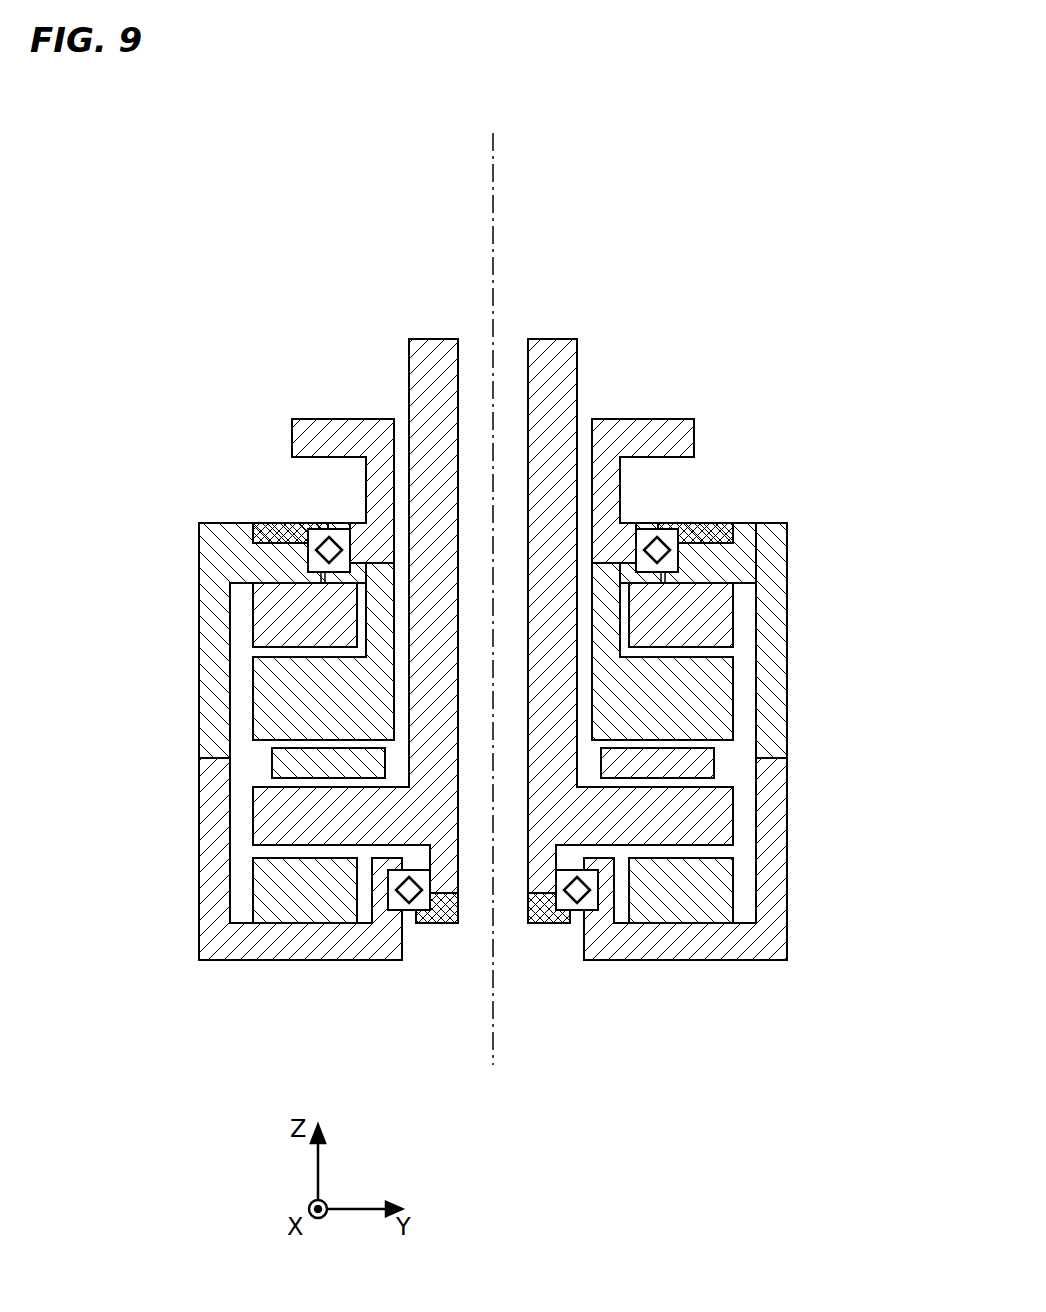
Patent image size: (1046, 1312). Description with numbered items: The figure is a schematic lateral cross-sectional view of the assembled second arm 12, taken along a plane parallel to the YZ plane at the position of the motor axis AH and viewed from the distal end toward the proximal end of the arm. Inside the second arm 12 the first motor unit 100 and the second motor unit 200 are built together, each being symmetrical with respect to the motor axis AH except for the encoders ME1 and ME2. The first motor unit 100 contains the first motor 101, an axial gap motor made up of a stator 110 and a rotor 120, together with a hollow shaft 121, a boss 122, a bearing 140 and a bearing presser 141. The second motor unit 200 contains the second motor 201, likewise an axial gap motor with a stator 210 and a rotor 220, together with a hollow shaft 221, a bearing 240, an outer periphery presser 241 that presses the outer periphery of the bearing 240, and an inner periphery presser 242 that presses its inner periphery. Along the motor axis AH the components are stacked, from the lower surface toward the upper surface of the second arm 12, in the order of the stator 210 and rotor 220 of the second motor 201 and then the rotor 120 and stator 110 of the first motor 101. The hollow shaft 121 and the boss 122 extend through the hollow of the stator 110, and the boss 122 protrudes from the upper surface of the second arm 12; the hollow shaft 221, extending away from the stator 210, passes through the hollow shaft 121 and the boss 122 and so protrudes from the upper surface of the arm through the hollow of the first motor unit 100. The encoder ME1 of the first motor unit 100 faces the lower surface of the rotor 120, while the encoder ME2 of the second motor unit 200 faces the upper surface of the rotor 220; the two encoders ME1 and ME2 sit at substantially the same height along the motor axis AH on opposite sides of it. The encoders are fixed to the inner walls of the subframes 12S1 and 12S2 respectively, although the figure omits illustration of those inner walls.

The second arm 12 is at (711, 597).
The motor axis AH is at (493, 177).
The first motor unit 100 is at (741, 580).
The second motor unit 200 is at (711, 681).
The first motor 101 is at (211, 557).
The second motor 201 is at (243, 683).
The stator 110 is at (273, 610).
The rotor 120 is at (272, 713).
The hollow shaft 121 is at (385, 620).
The boss 122 is at (300, 408).
The bearing 140 is at (308, 556).
The bearing presser 141 is at (273, 540).
The stator 210 is at (270, 893).
The rotor 220 is at (272, 825).
The hollow shaft 221 is at (596, 350).
The bearing 240 is at (398, 902).
The outer periphery presser 241 is at (380, 890).
The inner periphery presser 242 is at (445, 915).
The encoder ME1 is at (705, 762).
The encoder ME2 is at (282, 765).
The subframe 12S1 is at (767, 663).
The subframe 12S2 is at (775, 898).